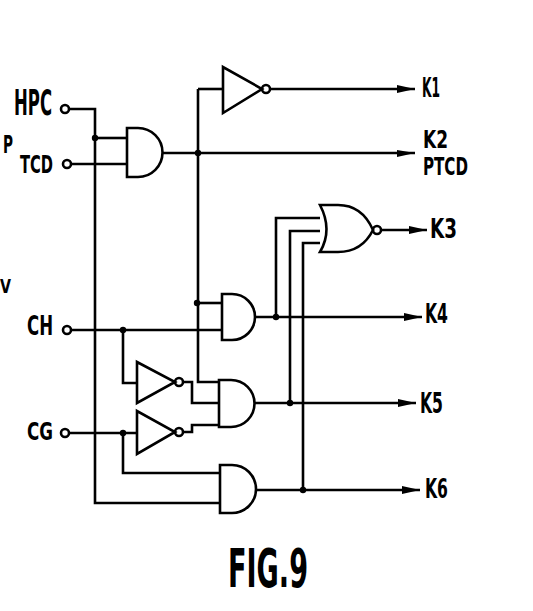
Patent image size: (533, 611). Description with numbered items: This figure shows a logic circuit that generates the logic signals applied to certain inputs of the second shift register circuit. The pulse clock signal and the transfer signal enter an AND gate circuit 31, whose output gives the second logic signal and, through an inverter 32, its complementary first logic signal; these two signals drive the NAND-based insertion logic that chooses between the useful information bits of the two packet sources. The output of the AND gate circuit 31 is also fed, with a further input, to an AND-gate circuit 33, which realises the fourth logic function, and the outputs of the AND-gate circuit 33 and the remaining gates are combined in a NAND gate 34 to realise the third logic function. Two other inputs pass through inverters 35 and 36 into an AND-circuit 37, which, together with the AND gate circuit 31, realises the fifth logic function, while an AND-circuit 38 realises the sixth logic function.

The AND gate circuit 31 is at (145, 147).
The inverter 32 is at (242, 87).
The AND-gate circuit 33 is at (240, 296).
The NAND gate 34 is at (348, 222).
The inverter 35 is at (150, 372).
The inverter 36 is at (155, 440).
The AND-circuit 37 is at (238, 418).
The AND-circuit 38 is at (243, 498).